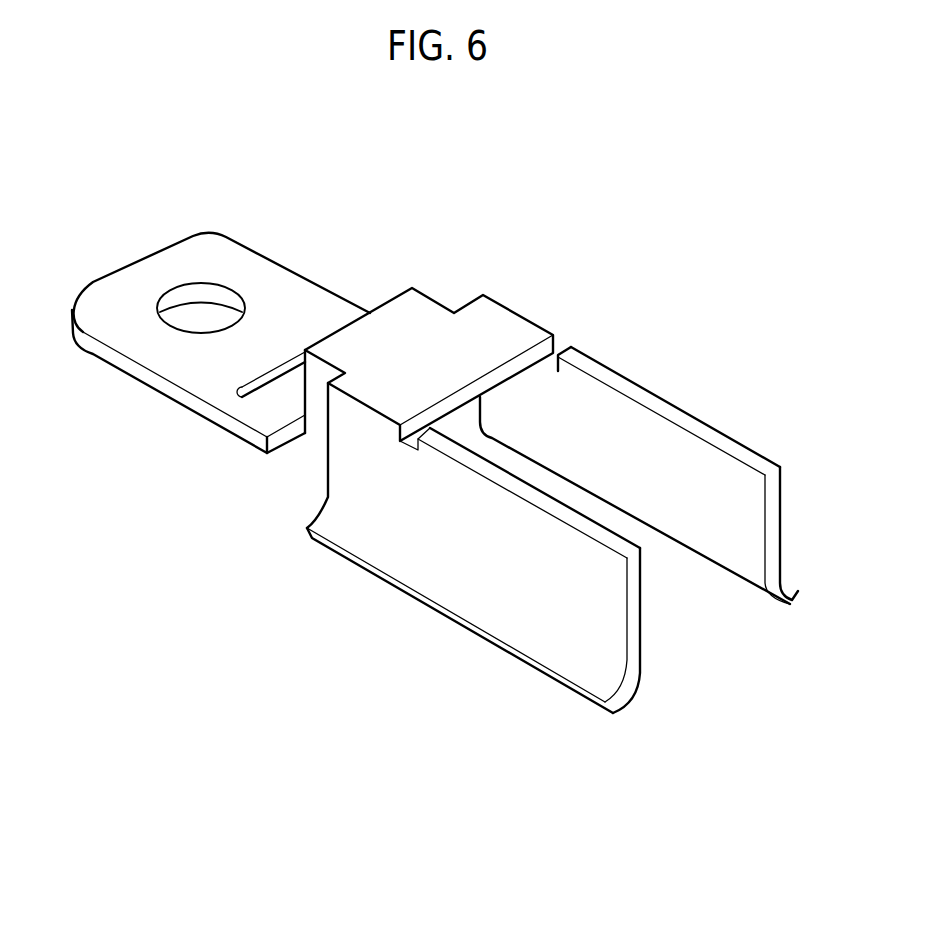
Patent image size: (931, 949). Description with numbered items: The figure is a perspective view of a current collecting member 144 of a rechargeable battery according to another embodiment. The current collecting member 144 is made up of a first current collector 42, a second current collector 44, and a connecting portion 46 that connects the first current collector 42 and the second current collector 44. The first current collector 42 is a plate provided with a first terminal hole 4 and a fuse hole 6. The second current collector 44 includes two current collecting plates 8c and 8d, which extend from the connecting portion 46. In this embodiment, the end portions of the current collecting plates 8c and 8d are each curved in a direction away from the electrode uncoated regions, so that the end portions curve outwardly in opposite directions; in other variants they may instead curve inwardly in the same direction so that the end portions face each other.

The first terminal hole 4 is at (208, 293).
The fuse hole 6 is at (287, 372).
The first current collector 42 is at (218, 422).
The connecting portion 46 is at (325, 408).
The second current collector 44 is at (665, 772).
The current collecting plate 8c is at (600, 707).
The current collecting plate 8d is at (742, 567).
The current collecting member 144 is at (628, 813).